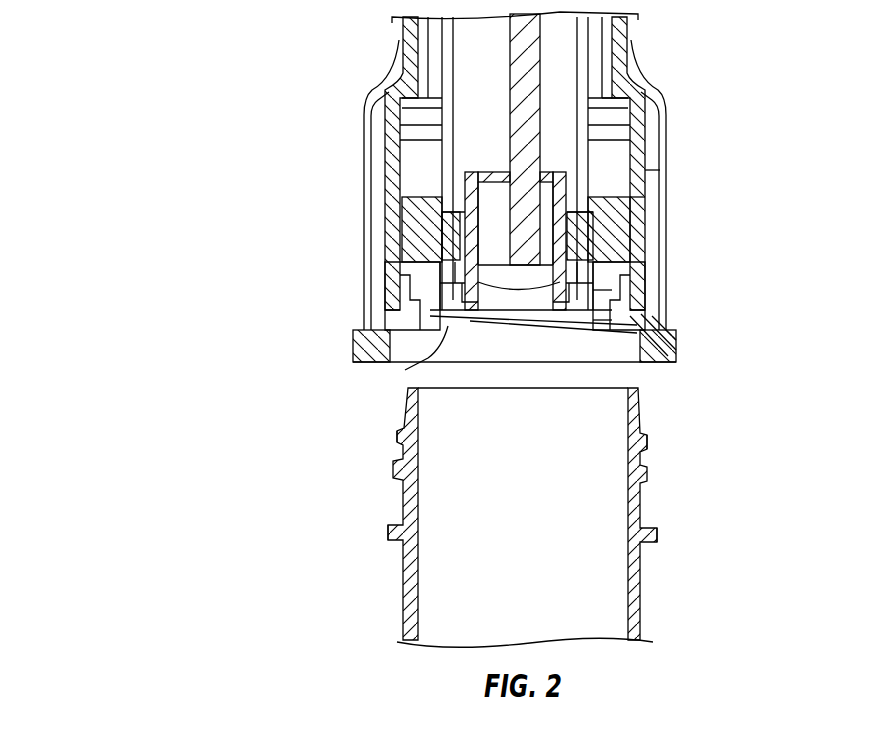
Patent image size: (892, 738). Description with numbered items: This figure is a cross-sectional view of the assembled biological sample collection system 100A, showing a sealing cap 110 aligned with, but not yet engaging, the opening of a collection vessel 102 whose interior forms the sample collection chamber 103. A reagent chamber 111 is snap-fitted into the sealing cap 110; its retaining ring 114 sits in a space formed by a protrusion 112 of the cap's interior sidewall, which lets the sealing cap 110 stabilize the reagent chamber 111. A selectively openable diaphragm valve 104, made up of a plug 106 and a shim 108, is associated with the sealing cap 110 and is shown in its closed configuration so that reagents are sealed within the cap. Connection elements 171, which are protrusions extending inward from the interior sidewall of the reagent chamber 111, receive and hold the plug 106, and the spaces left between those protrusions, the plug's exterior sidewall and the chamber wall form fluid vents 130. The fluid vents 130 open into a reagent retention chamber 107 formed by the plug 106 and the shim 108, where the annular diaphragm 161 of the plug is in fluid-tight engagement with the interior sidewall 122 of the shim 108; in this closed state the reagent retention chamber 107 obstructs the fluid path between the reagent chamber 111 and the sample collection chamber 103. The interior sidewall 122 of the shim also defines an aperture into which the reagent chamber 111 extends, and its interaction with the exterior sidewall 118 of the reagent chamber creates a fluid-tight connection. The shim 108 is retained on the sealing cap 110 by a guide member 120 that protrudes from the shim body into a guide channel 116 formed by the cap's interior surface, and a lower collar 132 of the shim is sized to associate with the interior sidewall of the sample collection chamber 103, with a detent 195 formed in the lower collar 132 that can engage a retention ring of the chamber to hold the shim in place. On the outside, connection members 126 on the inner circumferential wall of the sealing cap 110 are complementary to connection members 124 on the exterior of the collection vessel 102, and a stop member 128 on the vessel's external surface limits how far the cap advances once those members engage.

The assembled biological sample collection system 100A is at (165, 30).
The collection vessel 102 is at (645, 636).
The sample collection chamber 103 is at (590, 563).
The selectively openable diaphragm valve 104 is at (600, 35).
The plug 106 is at (580, 252).
The reagent retention chamber 107 is at (385, 350).
The shim 108 is at (620, 300).
The sealing cap 110 is at (352, 150).
The reagent chamber 111 is at (452, 61).
The protrusion 112 is at (400, 114).
The retaining ring 114 is at (615, 129).
The guide channel 116 is at (640, 180).
The exterior sidewall 118 is at (485, 194).
The guide member 120 is at (640, 206).
The interior sidewall 122 is at (620, 320).
The connection members 124 is at (397, 437).
The connection members 126 is at (445, 294).
The stop member 128 is at (388, 532).
The fluid vents 130 is at (450, 262).
The lower collar 132 is at (398, 315).
The annular diaphragm 161 is at (410, 366).
The connection elements 171 is at (572, 232).
The detent 195 is at (612, 312).